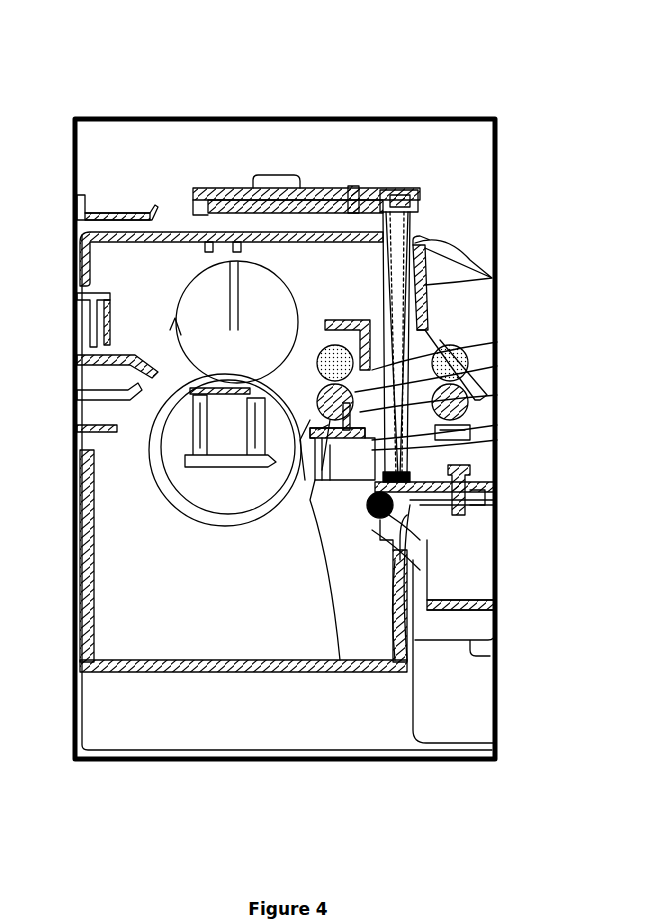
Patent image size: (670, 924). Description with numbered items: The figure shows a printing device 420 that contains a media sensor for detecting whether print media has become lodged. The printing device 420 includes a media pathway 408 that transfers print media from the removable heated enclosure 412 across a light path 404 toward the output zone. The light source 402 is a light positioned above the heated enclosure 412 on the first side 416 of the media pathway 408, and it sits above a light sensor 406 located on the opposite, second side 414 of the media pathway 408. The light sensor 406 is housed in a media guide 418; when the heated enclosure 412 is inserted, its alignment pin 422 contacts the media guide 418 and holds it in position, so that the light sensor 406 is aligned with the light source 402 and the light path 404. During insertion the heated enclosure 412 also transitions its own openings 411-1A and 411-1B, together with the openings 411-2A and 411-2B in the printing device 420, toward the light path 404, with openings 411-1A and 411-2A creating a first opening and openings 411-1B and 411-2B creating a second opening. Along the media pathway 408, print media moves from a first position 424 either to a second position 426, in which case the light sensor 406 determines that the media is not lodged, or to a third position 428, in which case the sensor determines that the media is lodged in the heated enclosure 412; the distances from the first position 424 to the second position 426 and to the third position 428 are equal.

The printing device 420 is at (264, 78).
The light source 402 is at (404, 190).
The light path 404 is at (477, 432).
The light sensor 406 is at (415, 515).
The media pathway 408 is at (466, 398).
The opening 411-1A is at (480, 345).
The opening 411-2A is at (432, 292).
The opening 411-1B is at (435, 455).
The opening 411-2B is at (462, 415).
The heated enclosure 412 is at (413, 740).
The second side 414 is at (323, 427).
The first side 416 is at (470, 368).
The media guide 418 is at (392, 515).
The alignment pin 422 is at (413, 568).
The first position 424 is at (180, 383).
The second position 426 is at (470, 398).
The third position 428 is at (247, 520).